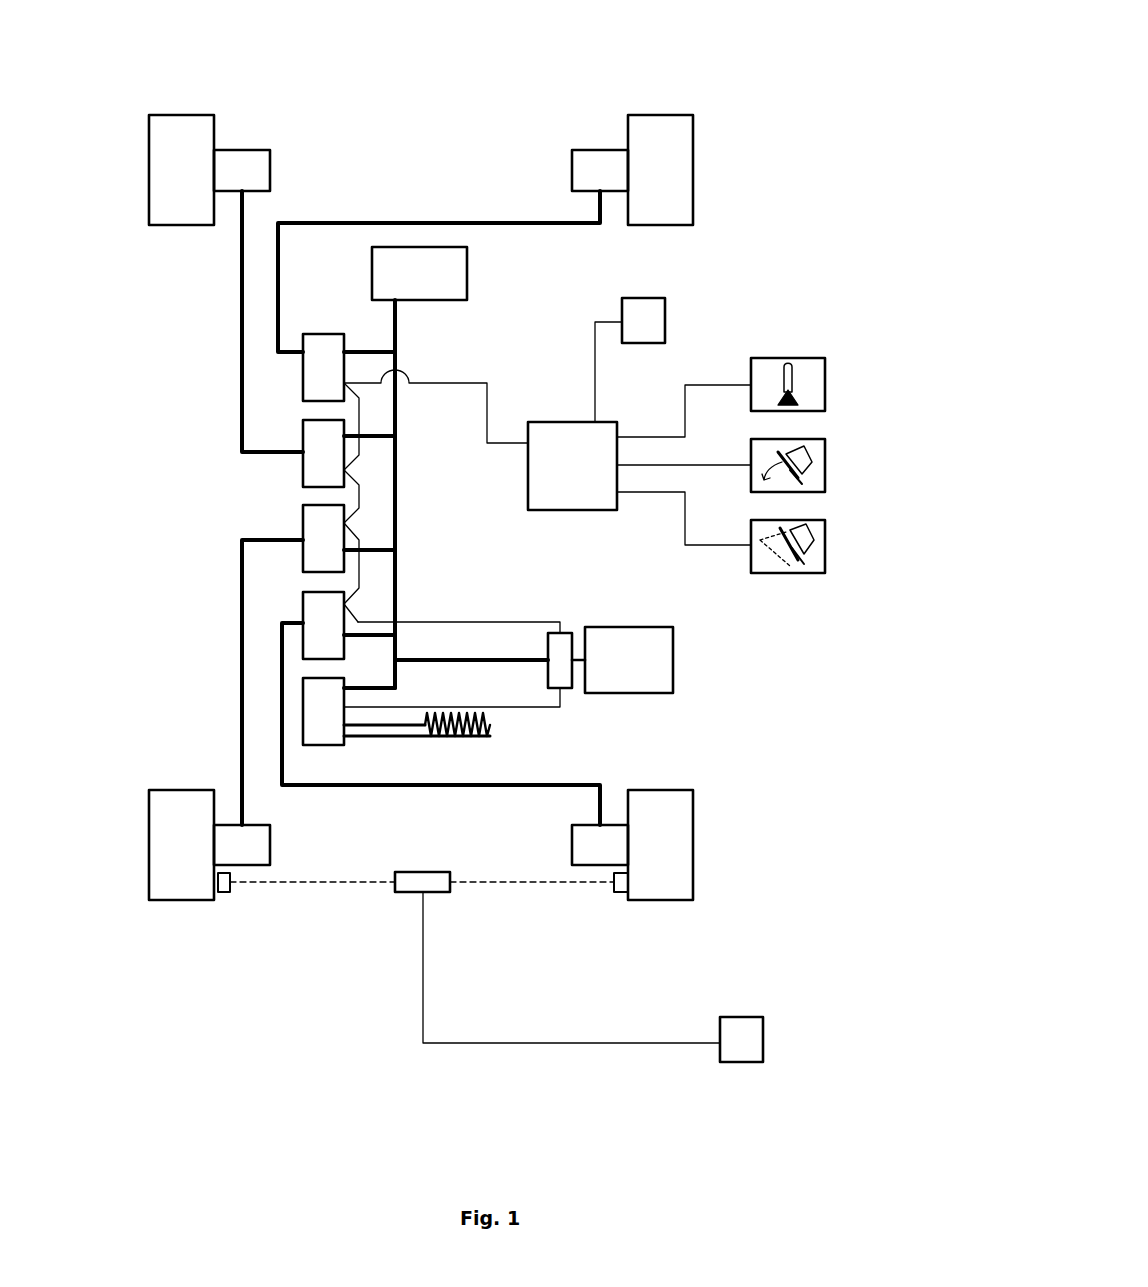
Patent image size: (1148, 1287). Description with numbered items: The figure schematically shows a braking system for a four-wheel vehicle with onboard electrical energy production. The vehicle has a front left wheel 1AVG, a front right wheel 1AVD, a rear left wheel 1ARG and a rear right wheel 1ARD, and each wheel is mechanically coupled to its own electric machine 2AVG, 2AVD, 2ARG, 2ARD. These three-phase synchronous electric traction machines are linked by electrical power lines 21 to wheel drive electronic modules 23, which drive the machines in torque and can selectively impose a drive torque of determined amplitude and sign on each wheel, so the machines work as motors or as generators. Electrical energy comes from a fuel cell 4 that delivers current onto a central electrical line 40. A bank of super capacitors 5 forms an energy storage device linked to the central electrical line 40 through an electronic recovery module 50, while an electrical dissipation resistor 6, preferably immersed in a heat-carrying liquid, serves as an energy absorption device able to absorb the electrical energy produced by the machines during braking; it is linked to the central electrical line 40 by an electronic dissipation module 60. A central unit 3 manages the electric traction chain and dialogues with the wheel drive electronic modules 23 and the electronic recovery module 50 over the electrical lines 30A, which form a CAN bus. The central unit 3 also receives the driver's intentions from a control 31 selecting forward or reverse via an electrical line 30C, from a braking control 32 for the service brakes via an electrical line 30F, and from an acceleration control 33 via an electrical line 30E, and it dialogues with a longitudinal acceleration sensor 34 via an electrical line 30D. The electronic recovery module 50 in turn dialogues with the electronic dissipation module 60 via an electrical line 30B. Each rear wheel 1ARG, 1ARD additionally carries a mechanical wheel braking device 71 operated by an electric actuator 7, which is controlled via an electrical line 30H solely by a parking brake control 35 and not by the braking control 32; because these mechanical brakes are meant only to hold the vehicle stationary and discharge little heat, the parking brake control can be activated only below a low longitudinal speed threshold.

The front left wheel 1AVG is at (169, 115).
The electric machine 2AVG is at (245, 150).
The electric machine 2AVD is at (598, 150).
The front right wheel 1AVD is at (668, 115).
The electrical power lines 21 is at (278, 288).
The wheel drive electronic modules 23 is at (312, 605).
The fuel cell 4 is at (452, 286).
The electrical lines 30A is at (423, 383).
The central unit 3 is at (545, 430).
The longitudinal acceleration sensor 34 is at (655, 312).
The electrical line 30D is at (595, 385).
The electrical line 30C is at (718, 387).
The electrical line 30F is at (718, 467).
The electrical line 30E is at (718, 547).
The control selecting forward or reverse 31 is at (818, 385).
The braking control 32 is at (818, 462).
The acceleration control 33 is at (818, 538).
The central electrical line 40 is at (397, 578).
The electronic recovery module 50 is at (566, 633).
The bank of super capacitors 5 is at (663, 665).
The electrical line 30B is at (545, 707).
The electrical dissipation resistor 6 is at (490, 736).
The electronic dissipation module 60 is at (320, 733).
The electric actuator 7 is at (418, 872).
The mechanical wheel braking device 71 is at (224, 892).
The electric machine 2ARG is at (247, 865).
The rear left wheel 1ARG is at (166, 900).
The electric machine 2ARD is at (590, 865).
The rear right wheel 1ARD is at (675, 900).
The electrical line 30H is at (520, 1043).
The parking brake control 35 is at (745, 1062).